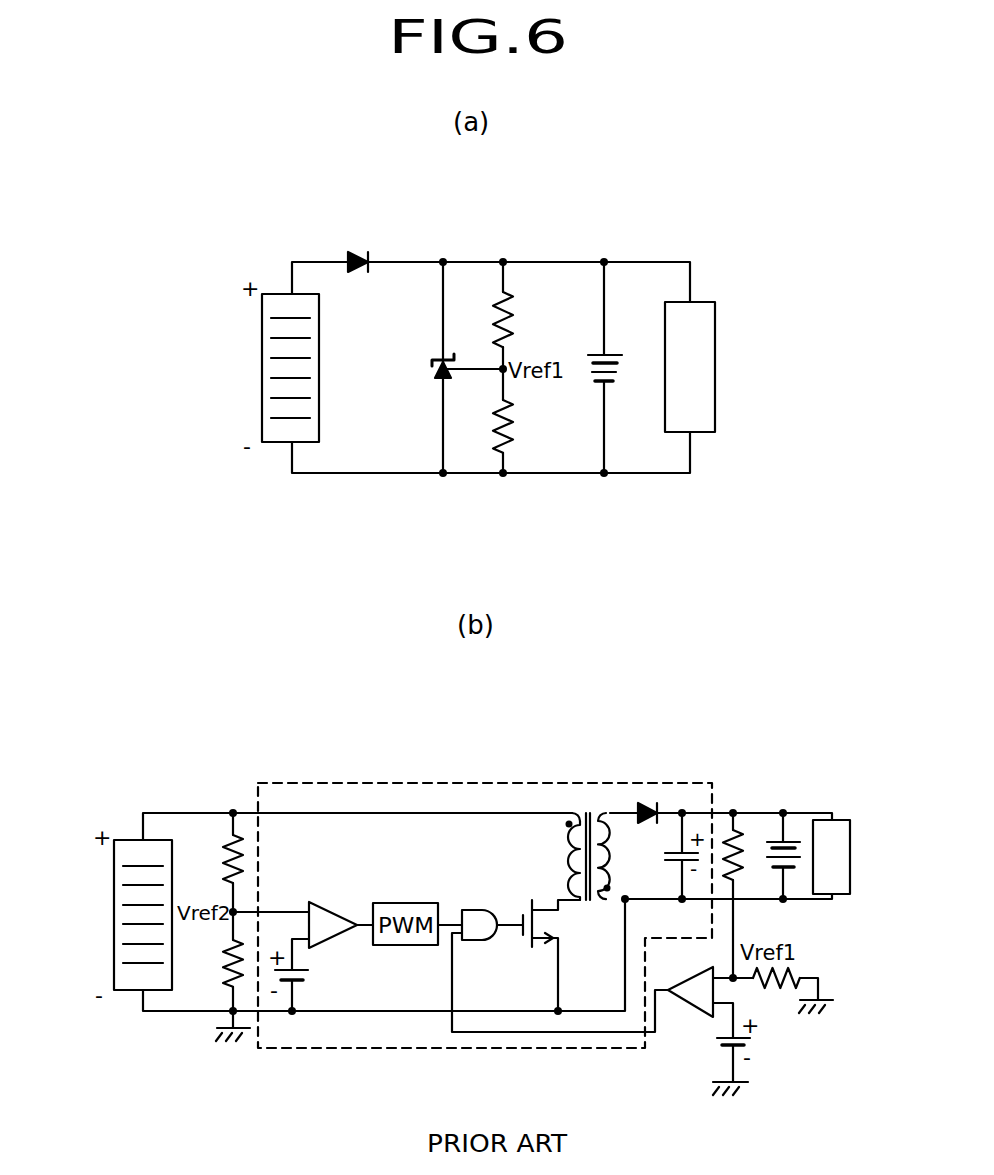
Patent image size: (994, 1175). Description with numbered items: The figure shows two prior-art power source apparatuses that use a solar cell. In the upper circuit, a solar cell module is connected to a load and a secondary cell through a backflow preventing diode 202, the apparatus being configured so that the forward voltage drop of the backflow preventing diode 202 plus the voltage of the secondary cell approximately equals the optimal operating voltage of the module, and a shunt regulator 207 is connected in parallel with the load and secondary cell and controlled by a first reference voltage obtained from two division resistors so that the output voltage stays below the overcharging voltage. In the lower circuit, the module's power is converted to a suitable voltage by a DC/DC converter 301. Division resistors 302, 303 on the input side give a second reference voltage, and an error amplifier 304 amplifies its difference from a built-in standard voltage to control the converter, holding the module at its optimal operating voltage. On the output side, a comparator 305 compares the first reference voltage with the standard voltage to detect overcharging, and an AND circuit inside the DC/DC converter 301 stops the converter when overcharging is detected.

The backflow preventing diode 202 is at (362, 238).
The shunt regulator 207 is at (423, 373).
The DC/DC converter 301 is at (422, 783).
The division resistor 302 is at (226, 828).
The division resistor 303 is at (209, 976).
The error amplifier 304 is at (343, 943).
The comparator 305 is at (692, 1022).